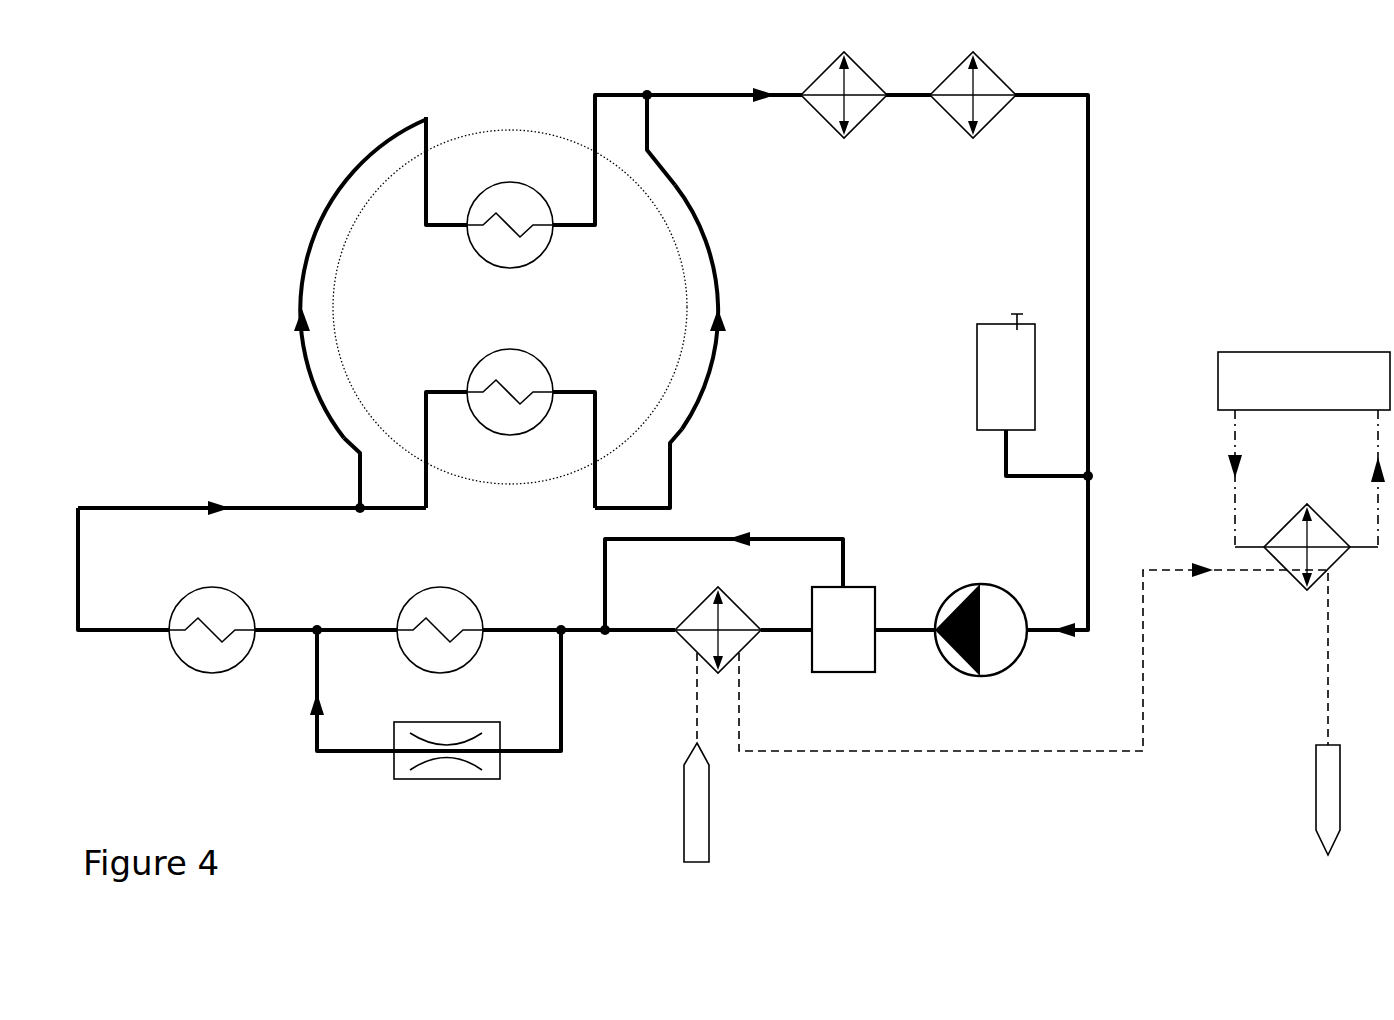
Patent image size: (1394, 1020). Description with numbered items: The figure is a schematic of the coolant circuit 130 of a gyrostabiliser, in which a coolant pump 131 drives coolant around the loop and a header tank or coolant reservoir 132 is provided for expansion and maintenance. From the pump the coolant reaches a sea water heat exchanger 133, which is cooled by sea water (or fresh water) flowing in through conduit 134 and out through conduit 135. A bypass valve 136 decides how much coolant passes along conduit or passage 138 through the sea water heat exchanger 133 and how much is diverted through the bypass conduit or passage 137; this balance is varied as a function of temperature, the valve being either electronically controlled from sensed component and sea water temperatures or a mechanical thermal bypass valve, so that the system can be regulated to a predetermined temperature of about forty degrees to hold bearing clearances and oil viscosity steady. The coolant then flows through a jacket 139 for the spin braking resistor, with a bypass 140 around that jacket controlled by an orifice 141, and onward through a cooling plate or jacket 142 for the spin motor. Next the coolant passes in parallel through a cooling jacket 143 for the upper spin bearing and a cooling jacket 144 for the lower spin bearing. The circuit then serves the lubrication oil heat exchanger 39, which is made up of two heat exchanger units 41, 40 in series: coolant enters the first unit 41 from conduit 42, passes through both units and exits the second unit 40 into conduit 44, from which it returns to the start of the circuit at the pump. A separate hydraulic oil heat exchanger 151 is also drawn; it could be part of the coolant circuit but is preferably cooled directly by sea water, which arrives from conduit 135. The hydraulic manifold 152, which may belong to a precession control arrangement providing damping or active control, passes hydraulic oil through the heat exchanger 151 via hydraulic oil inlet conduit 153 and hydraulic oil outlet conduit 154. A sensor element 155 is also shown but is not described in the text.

The coolant circuit 130 is at (1228, 151).
The lubrication oil heat exchanger 39 is at (921, 162).
The heat exchanger unit 40 is at (948, 113).
The heat exchanger unit 41 is at (820, 113).
The conduit 42 is at (723, 93).
The conduit 44 is at (1047, 93).
The coolant pump 131 is at (1007, 667).
The header tank 132 is at (977, 382).
The sea water heat exchanger 133 is at (682, 622).
The conduit 134 is at (697, 693).
The conduit 135 is at (808, 751).
The bypass valve 136 is at (847, 672).
The bypass conduit 137 is at (813, 537).
The conduit 138 is at (777, 628).
The jacket 139 is at (470, 600).
The bypass 140 is at (465, 732).
The orifice 141 is at (435, 779).
The cooling plate 142 is at (241, 599).
The cooling jacket 143 is at (540, 256).
The cooling jacket 144 is at (533, 355).
The hydraulic oil heat exchanger 151 is at (1293, 583).
The hydraulic manifold 152 is at (1280, 342).
The hydraulic oil inlet conduit 153 is at (1235, 525).
The hydraulic oil outlet conduit 154 is at (1378, 528).
The temperature sensor 155 is at (1328, 678).